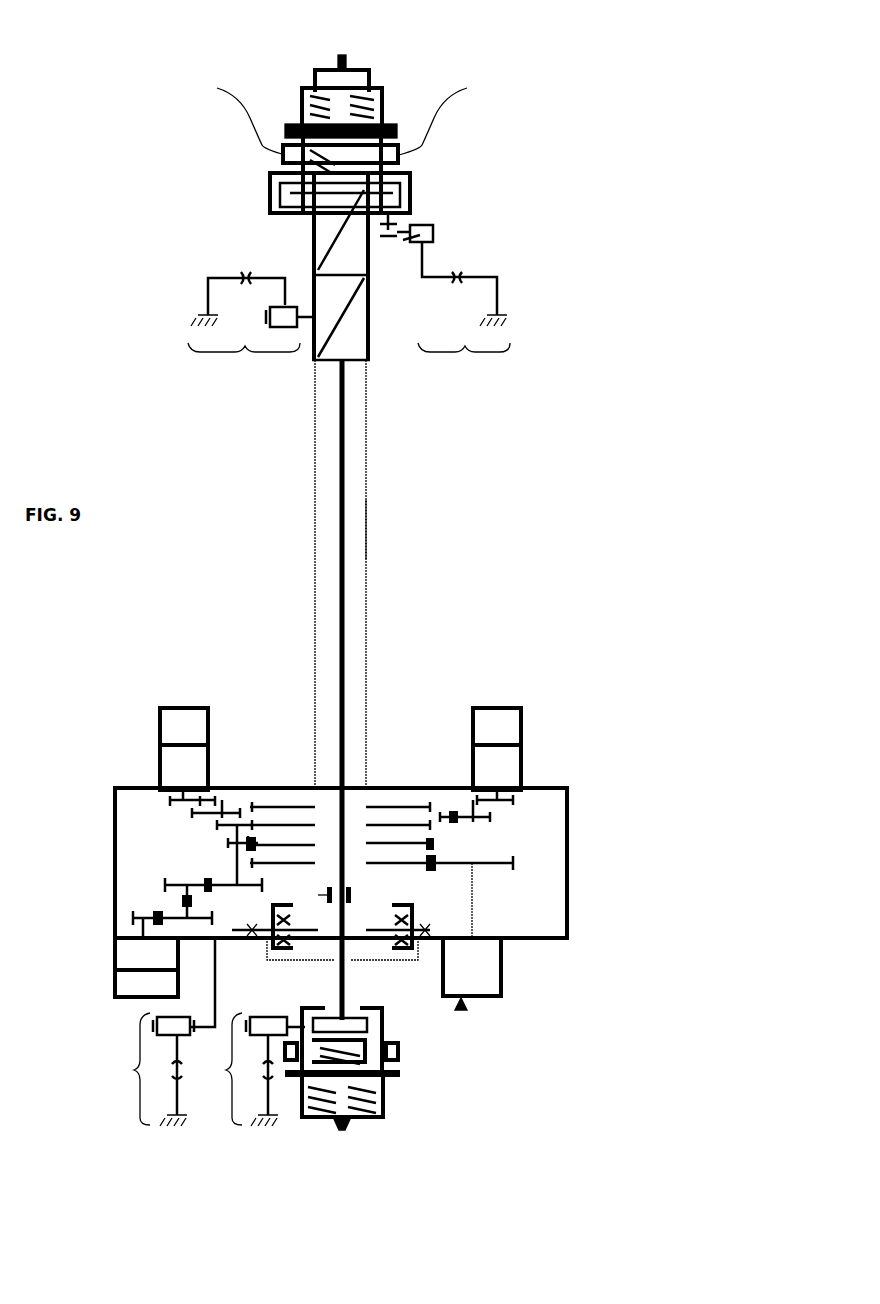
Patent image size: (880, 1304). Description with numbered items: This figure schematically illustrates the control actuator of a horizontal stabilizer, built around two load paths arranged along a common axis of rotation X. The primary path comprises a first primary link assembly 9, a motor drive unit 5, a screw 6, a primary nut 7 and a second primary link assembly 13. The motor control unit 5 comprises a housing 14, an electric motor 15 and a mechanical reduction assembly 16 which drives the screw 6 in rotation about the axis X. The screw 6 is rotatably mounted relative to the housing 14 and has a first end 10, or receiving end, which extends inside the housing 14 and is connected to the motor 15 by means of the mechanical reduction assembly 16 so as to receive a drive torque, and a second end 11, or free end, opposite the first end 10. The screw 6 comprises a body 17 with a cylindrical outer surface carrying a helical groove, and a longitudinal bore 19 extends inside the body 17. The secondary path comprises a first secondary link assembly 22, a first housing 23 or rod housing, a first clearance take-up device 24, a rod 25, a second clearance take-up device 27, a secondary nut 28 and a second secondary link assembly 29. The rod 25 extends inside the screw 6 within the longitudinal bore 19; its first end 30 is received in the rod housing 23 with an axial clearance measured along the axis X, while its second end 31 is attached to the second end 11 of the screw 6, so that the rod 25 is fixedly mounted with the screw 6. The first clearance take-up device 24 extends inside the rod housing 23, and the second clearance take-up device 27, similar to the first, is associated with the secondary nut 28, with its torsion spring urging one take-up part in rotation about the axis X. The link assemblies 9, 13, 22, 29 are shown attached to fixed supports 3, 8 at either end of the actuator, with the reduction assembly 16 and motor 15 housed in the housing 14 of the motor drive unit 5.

The ground/fixed support 3 is at (497, 313).
The motor drive unit 5 is at (114, 830).
The screw 6 is at (314, 410).
The primary nut 7 is at (385, 335).
The fixed support 8 is at (174, 1125).
The first primary link assembly 9 is at (166, 1032).
The first end 10 is at (372, 926).
The second end 11 is at (330, 72).
The second primary link assembly 13 is at (250, 329).
The housing 14 is at (114, 893).
The electric motor 15 is at (150, 955).
The mechanical reduction assembly 16 is at (222, 866).
The body 17 is at (368, 425).
The longitudinal bore 19 is at (355, 540).
The first secondary link assembly 22 is at (222, 1073).
The first housing 23 is at (383, 1022).
The first clearance take-up device 24 is at (372, 1060).
The rod 25 is at (346, 458).
The second clearance take-up device 27 is at (326, 195).
The secondary nut 28 is at (408, 198).
The second secondary link assembly 29 is at (445, 299).
The first end 30 is at (338, 1018).
The second end 31 is at (340, 56).